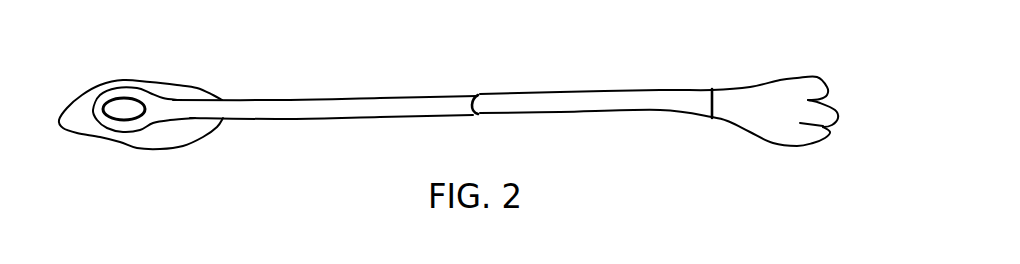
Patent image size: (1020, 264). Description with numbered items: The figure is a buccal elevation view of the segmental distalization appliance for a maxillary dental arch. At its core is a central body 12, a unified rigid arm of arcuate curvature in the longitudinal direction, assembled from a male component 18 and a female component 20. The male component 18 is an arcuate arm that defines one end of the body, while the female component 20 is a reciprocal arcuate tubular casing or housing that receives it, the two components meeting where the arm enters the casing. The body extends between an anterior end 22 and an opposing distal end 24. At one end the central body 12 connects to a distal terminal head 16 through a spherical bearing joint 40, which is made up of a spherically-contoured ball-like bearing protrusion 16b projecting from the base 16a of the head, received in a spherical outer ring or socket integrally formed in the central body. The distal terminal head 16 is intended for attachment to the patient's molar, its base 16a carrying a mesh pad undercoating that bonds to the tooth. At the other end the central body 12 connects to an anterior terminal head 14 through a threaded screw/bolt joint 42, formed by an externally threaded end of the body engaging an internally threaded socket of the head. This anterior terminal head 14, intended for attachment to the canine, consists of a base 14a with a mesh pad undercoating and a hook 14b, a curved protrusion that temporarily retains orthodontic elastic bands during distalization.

The central body 12 is at (469, 105).
The anterior terminal head 14 is at (798, 105).
The base 14a is at (762, 118).
The hook 14b is at (823, 118).
The distal terminal head 16 is at (155, 111).
The base 16a is at (172, 128).
The spherical bearing protrusion 16b is at (121, 107).
The male component 18 is at (345, 107).
The female component 20 is at (602, 100).
The anterior end 22 is at (97, 105).
The distal end 24 is at (752, 51).
The spherical bearing joint 40 is at (138, 98).
The threaded screw/bolt joint 42 is at (712, 83).